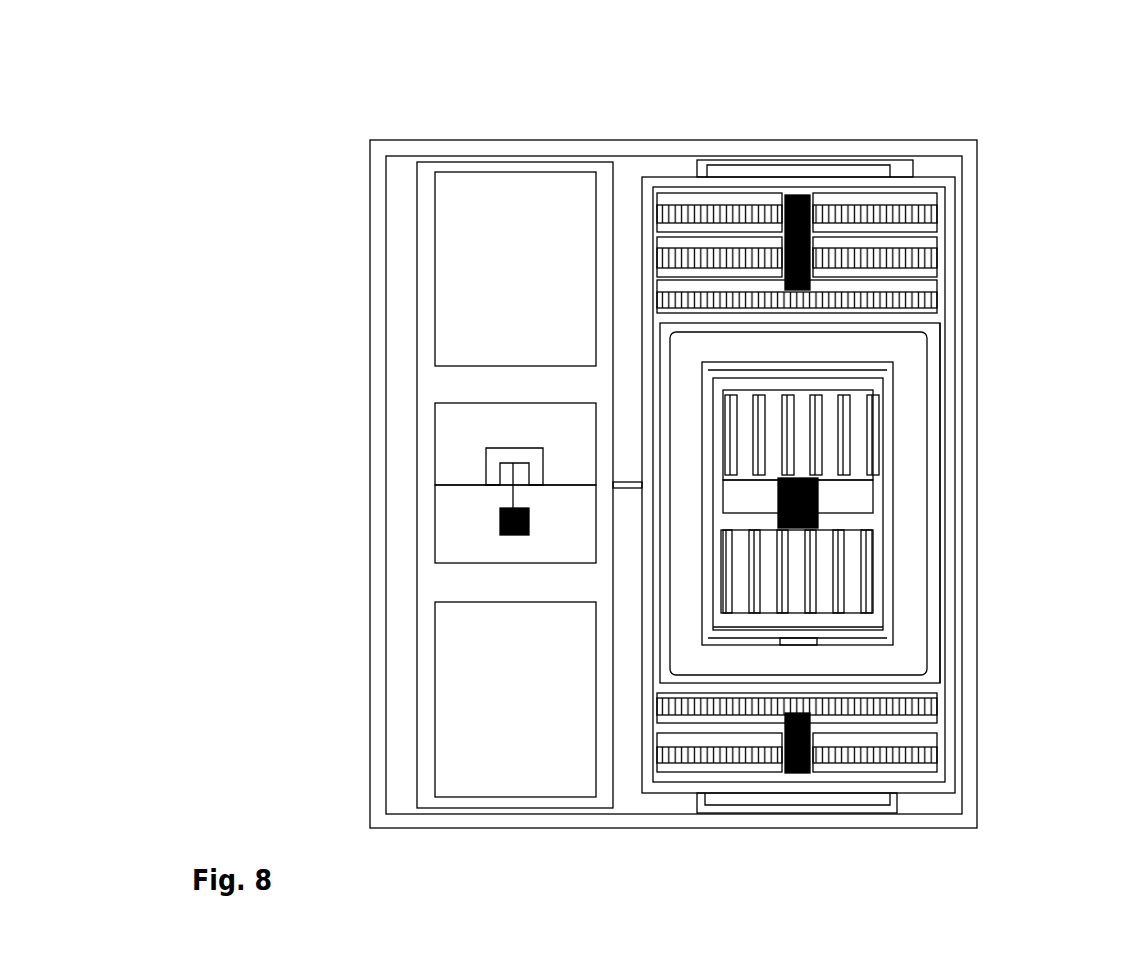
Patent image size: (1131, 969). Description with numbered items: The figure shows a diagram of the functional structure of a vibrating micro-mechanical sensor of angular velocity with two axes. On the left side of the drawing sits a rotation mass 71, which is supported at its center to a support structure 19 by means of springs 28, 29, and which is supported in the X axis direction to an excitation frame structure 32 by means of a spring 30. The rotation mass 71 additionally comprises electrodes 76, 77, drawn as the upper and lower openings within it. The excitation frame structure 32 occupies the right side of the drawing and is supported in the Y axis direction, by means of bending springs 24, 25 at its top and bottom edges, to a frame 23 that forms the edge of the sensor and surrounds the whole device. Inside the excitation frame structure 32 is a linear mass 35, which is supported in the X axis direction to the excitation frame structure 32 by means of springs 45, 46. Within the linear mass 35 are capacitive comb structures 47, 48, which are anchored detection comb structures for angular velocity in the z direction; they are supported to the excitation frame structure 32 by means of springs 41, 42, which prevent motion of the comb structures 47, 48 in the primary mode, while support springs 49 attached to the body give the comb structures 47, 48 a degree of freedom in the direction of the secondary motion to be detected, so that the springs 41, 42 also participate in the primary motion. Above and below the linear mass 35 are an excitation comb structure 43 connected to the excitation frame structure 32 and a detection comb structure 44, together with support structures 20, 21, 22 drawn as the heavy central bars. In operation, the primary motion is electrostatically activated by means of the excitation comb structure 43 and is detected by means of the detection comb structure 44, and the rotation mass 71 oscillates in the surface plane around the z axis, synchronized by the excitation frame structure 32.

The support structure 19 is at (580, 278).
The support structure 20 is at (813, 262).
The support structure 21 is at (818, 515).
The support structure 22 is at (810, 752).
The frame 23 is at (748, 140).
The bending spring 24 is at (807, 163).
The bending spring 25 is at (897, 797).
The spring 28 is at (518, 478).
The spring 29 is at (453, 478).
The spring 30 is at (630, 483).
The excitation frame structure 32 is at (910, 163).
The linear mass 35 is at (928, 397).
The spring 41 is at (862, 368).
The spring 42 is at (843, 635).
The excitation comb structure 43 is at (875, 238).
The detection comb structure 44 is at (852, 735).
The spring 45 is at (665, 392).
The spring 46 is at (940, 657).
The capacitive comb structure 47 is at (793, 442).
The capacitive comb structure 48 is at (815, 585).
The support spring 49 is at (860, 497).
The rotation mass 71 is at (433, 163).
The electrode 76 is at (543, 173).
The electrode 77 is at (472, 602).